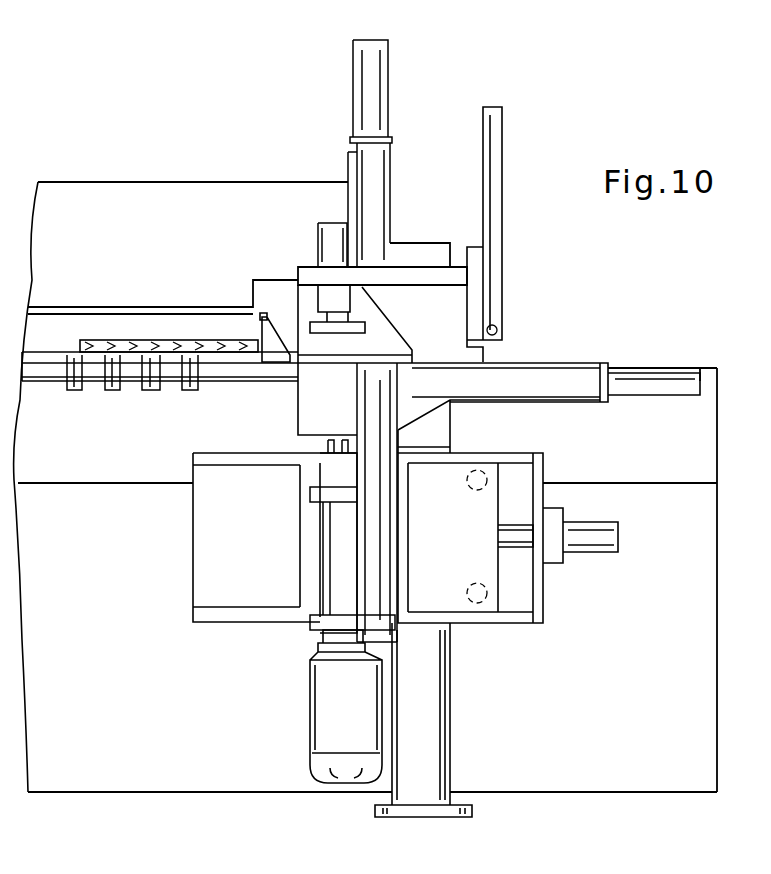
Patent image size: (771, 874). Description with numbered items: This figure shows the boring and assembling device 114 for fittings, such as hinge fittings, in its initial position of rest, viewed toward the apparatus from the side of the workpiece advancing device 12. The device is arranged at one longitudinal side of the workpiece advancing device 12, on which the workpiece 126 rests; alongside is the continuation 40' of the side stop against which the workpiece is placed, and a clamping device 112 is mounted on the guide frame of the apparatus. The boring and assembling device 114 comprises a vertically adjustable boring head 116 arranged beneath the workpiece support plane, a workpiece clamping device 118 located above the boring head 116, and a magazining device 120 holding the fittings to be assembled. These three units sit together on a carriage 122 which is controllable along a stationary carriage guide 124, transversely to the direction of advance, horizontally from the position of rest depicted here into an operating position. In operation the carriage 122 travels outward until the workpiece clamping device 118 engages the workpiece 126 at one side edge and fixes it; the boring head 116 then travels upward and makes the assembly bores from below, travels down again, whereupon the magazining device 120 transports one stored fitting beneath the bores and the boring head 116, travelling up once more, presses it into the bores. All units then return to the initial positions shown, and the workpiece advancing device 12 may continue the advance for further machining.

The workpiece advancing device 12 is at (75, 490).
The continuation of the side stop 40' is at (282, 283).
The clamping device 112 is at (215, 173).
The boring and assembling device 114 is at (187, 562).
The boring head 116 is at (334, 466).
The workpiece clamping device 118 is at (328, 336).
The magazining device 120 is at (493, 178).
The carriage 122 is at (376, 535).
The carriage guide 124 is at (513, 462).
The workpiece 126 is at (138, 348).